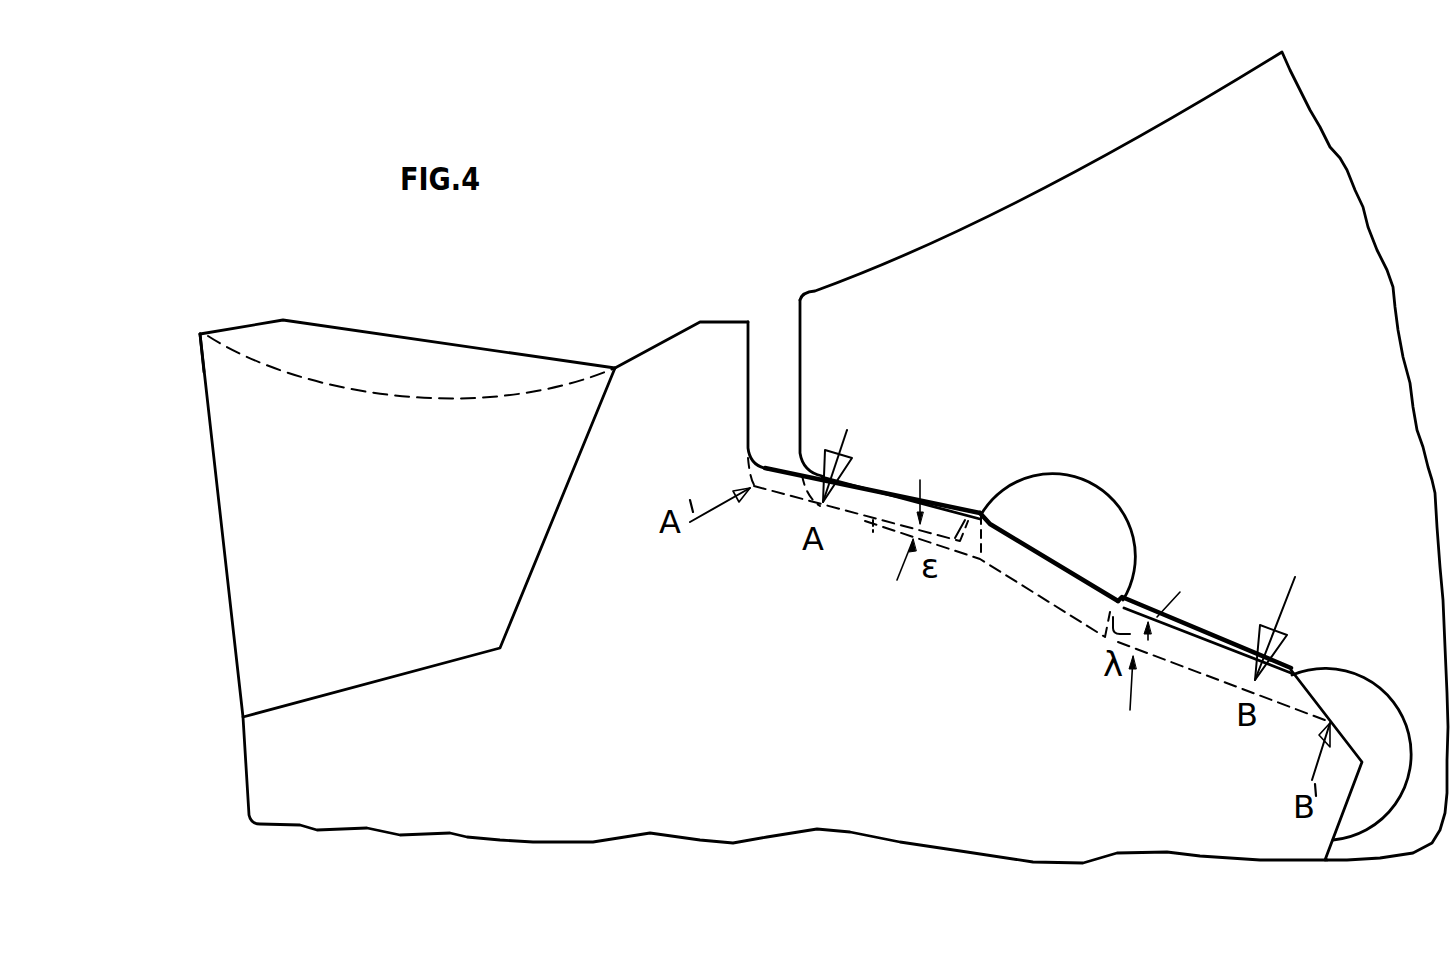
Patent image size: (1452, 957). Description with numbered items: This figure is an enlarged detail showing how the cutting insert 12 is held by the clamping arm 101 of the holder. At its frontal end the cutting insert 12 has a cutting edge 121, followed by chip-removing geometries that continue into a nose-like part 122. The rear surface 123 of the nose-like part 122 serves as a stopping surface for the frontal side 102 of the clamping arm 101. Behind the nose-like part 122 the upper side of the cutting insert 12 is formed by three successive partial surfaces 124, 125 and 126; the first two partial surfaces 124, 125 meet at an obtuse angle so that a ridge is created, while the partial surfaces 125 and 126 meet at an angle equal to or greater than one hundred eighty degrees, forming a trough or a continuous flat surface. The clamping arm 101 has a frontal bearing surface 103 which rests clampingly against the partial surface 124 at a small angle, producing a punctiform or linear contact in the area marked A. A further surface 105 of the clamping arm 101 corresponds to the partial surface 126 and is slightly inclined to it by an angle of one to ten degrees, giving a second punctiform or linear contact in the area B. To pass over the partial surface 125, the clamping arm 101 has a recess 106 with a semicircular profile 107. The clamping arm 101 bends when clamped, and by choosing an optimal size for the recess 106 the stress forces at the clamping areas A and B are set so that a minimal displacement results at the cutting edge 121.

The cutting insert 12 is at (617, 724).
The clamping arm 101 is at (908, 365).
The frontal side 102 is at (800, 370).
The frontal bearing surface 103 is at (883, 478).
The further surface 105 is at (1195, 660).
The recess 106 is at (1062, 530).
The semicircular profile 107 is at (1118, 533).
The cutting edge 121 is at (197, 328).
The nose-like part 122 is at (683, 348).
The rear surface 123 is at (750, 373).
The first partial surface 124 is at (883, 478).
The second partial surface 125 is at (1037, 580).
The third partial surface 126 is at (1167, 663).